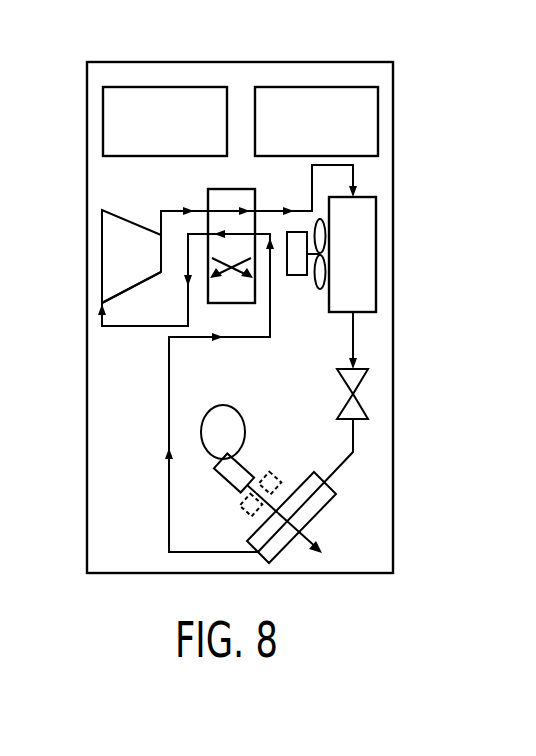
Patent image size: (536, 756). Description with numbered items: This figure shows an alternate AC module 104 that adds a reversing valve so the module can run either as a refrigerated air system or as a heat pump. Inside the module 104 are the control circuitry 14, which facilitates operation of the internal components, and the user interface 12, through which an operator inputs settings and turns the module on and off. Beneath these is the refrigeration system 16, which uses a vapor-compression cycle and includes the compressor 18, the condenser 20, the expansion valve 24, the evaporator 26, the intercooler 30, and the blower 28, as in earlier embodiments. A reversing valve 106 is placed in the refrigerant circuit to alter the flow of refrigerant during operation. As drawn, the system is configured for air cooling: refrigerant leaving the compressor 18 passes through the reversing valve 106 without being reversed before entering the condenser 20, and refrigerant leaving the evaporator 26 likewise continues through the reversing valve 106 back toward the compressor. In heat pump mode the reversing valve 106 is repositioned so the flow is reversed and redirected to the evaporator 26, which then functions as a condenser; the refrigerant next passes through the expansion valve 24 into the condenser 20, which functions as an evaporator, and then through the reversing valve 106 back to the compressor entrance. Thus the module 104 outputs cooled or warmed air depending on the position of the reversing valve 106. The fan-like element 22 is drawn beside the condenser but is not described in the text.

The AC module 104 is at (239, 62).
The control circuitry 14 is at (103, 117).
The user interface 12 is at (378, 117).
The refrigeration system 16 is at (116, 203).
The compressor 18 is at (130, 288).
The reversing valve 106 is at (232, 189).
The condenser 20 is at (376, 255).
The fan 22 is at (305, 286).
The expansion valve 24 is at (362, 383).
The evaporator 26 is at (323, 512).
The blower 28 is at (246, 433).
The intercooler 30 is at (280, 471).